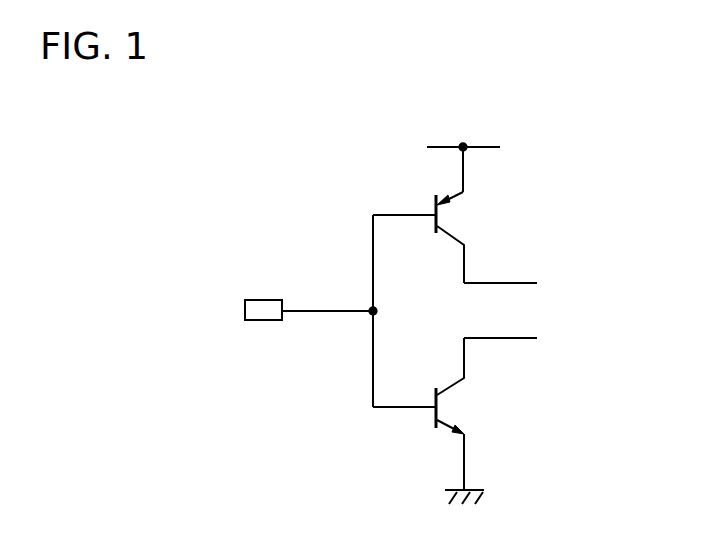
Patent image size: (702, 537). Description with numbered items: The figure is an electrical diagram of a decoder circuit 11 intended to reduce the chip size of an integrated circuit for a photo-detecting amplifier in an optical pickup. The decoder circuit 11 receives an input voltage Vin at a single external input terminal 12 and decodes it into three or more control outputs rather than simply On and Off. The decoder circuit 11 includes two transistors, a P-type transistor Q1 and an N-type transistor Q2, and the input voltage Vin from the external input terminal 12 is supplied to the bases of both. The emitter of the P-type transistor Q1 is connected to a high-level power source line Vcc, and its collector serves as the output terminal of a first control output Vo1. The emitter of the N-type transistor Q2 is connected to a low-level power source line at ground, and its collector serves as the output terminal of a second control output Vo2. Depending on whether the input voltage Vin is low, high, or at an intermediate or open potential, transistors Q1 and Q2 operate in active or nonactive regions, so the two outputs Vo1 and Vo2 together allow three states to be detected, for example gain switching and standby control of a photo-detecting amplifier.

The decoder circuit 11 is at (245, 159).
The external input terminal 12 is at (257, 300).
The P-type transistor Q1 is at (433, 200).
The N-type transistor Q2 is at (434, 414).
The power source line of high level Vcc is at (435, 164).
The input voltage Vin is at (242, 311).
The first control output Vo1 is at (527, 283).
The second control output Vo2 is at (527, 338).